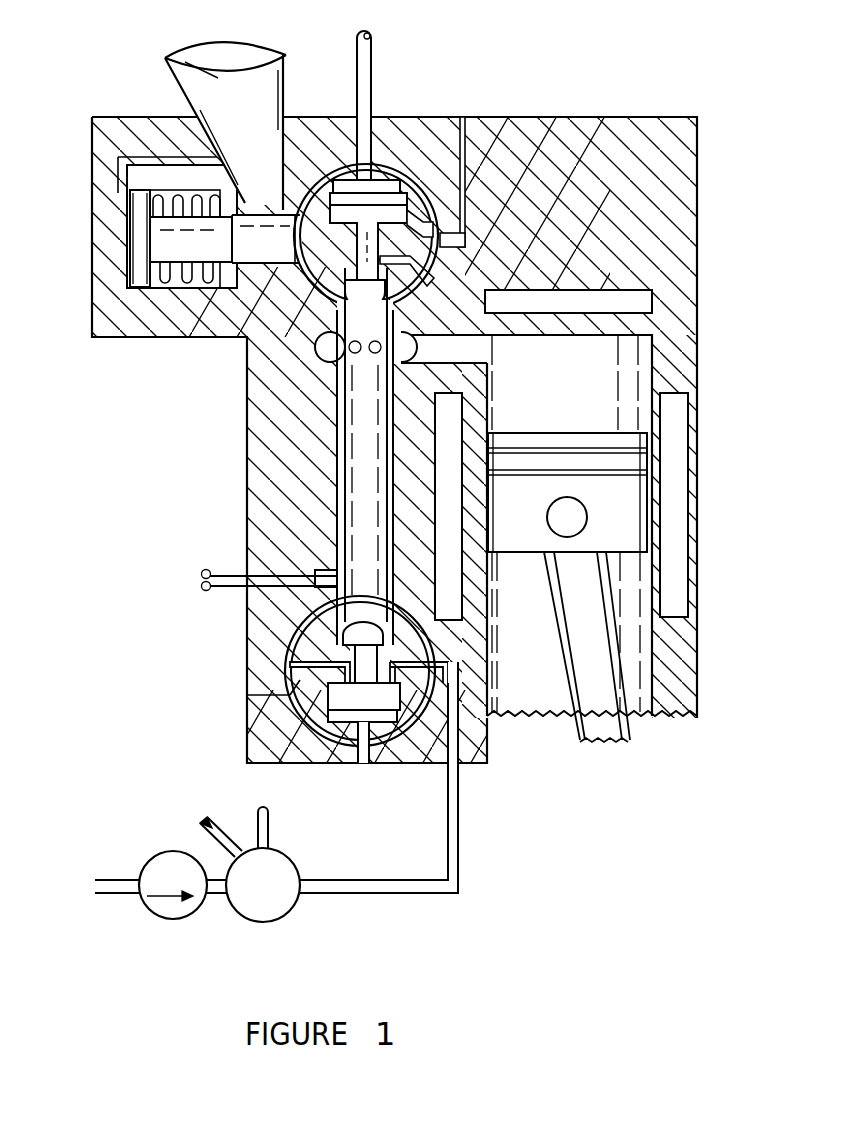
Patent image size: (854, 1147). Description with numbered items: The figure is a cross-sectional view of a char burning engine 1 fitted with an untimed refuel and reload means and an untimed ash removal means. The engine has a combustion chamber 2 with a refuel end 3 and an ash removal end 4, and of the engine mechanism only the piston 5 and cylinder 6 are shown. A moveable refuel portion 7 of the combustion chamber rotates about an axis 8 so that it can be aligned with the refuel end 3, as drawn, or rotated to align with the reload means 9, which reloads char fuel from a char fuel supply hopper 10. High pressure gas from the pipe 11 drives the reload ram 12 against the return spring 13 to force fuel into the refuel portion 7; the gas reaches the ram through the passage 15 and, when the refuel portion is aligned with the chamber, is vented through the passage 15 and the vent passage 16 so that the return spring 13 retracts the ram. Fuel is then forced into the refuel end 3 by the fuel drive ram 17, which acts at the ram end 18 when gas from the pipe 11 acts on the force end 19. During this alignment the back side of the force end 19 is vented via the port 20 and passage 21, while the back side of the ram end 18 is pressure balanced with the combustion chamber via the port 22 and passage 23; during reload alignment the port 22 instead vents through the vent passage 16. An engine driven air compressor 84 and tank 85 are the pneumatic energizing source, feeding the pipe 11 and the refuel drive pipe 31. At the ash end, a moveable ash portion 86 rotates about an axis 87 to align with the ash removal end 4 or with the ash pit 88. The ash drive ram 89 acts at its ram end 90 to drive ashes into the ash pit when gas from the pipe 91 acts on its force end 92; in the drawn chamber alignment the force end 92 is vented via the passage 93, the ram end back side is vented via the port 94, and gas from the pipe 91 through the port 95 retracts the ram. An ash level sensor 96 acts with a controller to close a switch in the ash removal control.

The char burning engine 1 is at (622, 112).
The combustion chamber 2 is at (345, 452).
The refuel end 3 is at (338, 365).
The ash removal end 4 is at (365, 575).
The piston 5 is at (610, 530).
The cylinder 6 is at (650, 366).
The moveable refuel portion 7 is at (255, 245).
The axis 8 is at (470, 175).
The reload means 9 is at (175, 338).
The char fuel supply hopper 10 is at (216, 78).
The pipe 11 is at (372, 57).
The reload ram 12 is at (143, 228).
The return spring 13 is at (125, 140).
The passage 15 is at (175, 192).
The vent passage 16 is at (352, 320).
The fuel drive ram 17 is at (412, 178).
The ram end 18 is at (445, 235).
The force end 19 is at (385, 175).
The port 20 is at (500, 165).
The passage 21 is at (450, 190).
The port 22 is at (455, 258).
The passage 23 is at (455, 300).
The pipe 31 is at (227, 835).
The engine driven air compressor 84 is at (178, 922).
The tank 85 is at (277, 922).
The moveable ash portion 86 is at (343, 630).
The axis 87 is at (392, 702).
The ash pit 88 is at (262, 672).
The ash drive ram 89 is at (388, 750).
The ram end 90 is at (312, 650).
The pipe 91 is at (457, 803).
The force end 92 is at (300, 740).
The passage 93 is at (340, 745).
The port 94 is at (292, 718).
The port 95 is at (455, 738).
The ash level sensor 96 is at (333, 594).